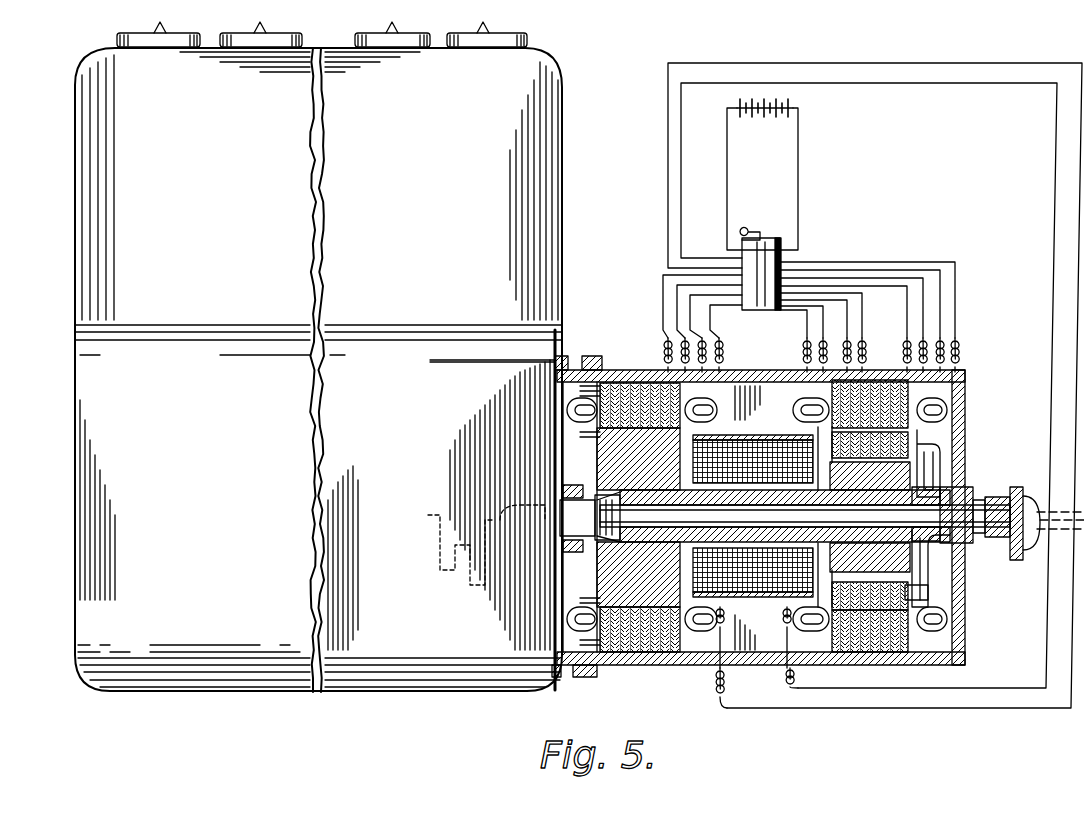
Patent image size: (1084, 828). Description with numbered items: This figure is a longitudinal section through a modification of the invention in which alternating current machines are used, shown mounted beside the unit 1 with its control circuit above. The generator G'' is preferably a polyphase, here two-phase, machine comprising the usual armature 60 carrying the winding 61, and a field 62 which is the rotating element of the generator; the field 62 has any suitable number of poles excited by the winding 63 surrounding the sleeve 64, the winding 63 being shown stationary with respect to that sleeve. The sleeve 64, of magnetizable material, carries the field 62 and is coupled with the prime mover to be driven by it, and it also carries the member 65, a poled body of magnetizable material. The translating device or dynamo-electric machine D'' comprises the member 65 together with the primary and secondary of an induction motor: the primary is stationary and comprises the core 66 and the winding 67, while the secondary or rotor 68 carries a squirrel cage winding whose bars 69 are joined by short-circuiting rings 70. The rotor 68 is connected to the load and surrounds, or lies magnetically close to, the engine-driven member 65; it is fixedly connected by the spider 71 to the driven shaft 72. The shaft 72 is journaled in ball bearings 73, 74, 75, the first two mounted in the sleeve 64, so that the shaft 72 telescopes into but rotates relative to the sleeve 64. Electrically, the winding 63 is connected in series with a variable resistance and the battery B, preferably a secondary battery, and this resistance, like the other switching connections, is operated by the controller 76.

The tank 1 is at (548, 170).
The armature 60 is at (604, 383).
The winding 61 is at (580, 398).
The field 62 is at (598, 592).
The winding 63 is at (748, 450).
The sleeve 64 is at (622, 532).
The member 65 is at (925, 565).
The core 66 is at (880, 390).
The winding 67 is at (958, 405).
The rotor 68 is at (942, 446).
The bars 69 is at (930, 593).
The short-circuiting rings 70 is at (825, 612).
The spider 71 is at (940, 502).
The shaft 72 is at (981, 538).
The ball bearing 73 is at (590, 518).
The ball bearing 74 is at (990, 577).
The ball bearing 75 is at (955, 543).
The controller 76 is at (783, 246).
The battery B is at (795, 108).